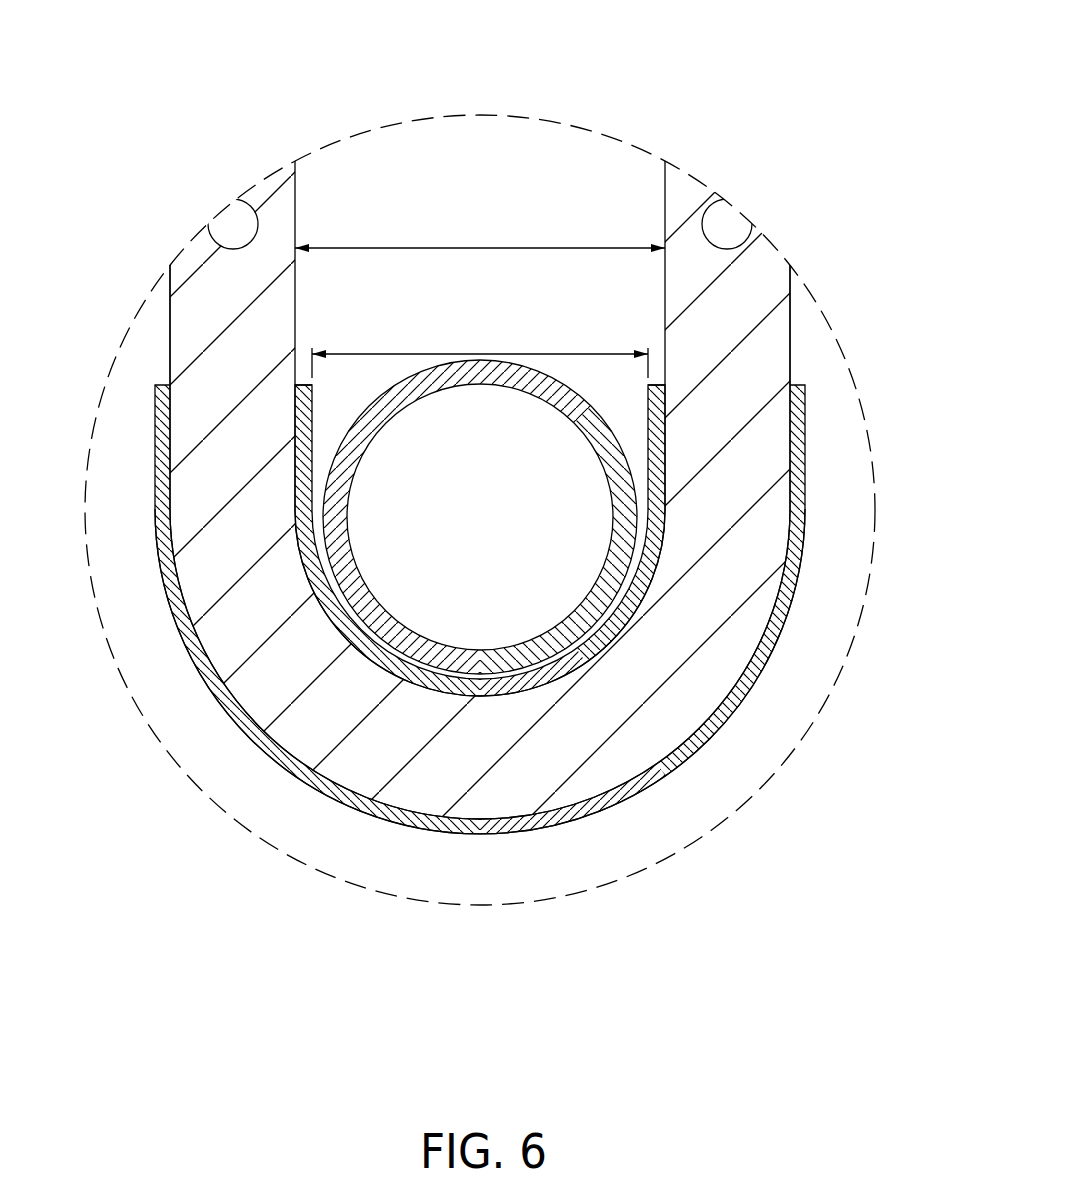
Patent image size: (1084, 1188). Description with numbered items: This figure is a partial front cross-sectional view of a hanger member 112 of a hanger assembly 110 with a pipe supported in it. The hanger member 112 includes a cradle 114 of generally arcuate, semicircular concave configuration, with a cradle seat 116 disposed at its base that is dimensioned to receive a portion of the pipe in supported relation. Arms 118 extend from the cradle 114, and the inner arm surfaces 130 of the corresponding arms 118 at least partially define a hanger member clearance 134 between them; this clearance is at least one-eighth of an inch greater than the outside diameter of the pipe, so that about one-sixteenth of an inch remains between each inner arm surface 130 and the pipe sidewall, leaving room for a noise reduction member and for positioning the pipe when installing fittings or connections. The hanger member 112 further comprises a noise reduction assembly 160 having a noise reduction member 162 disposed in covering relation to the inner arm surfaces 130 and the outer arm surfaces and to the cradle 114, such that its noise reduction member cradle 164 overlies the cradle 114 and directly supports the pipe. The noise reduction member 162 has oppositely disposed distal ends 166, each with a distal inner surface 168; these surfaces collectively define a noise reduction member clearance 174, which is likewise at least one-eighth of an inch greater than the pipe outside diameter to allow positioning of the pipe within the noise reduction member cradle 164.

The hanger assembly 110 is at (592, 90).
The hanger member 112 is at (735, 578).
The cradle 114 is at (580, 733).
The cradle seat 116 is at (452, 693).
The arm 118 is at (168, 345).
The inner arm surface 130 is at (295, 208).
The hanger member clearance 134 is at (386, 248).
The noise reduction assembly 160 is at (240, 765).
The noise reduction member 162 is at (197, 663).
The noise reduction member cradle 164 is at (392, 627).
The distal ends 166 is at (301, 383).
The distal inner surface 168 is at (313, 417).
The noise reduction member clearance 174 is at (448, 354).